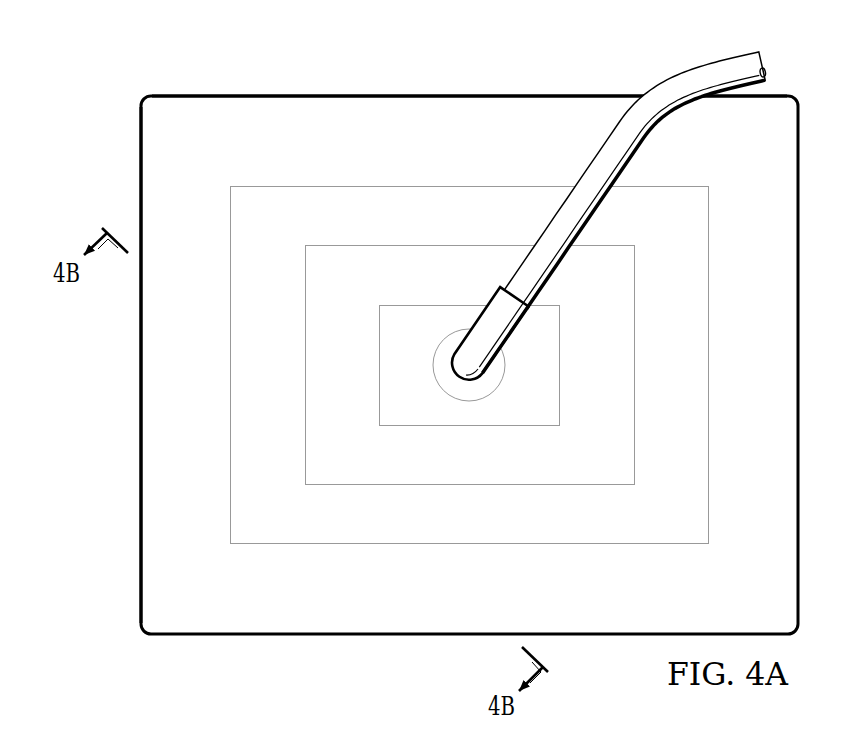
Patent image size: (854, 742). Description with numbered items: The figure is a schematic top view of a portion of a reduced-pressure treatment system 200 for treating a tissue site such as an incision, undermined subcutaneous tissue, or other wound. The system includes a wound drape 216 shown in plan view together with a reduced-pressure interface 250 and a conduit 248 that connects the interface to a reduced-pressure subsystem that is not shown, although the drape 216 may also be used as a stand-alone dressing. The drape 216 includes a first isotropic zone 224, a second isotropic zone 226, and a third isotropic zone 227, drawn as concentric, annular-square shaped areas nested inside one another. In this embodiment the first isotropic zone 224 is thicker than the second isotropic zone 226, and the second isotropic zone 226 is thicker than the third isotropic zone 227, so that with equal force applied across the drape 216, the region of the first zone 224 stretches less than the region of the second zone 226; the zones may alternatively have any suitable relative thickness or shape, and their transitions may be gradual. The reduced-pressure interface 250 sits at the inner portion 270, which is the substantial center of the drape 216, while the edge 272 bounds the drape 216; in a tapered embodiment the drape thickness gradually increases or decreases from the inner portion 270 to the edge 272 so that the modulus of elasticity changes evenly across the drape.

The reduced-pressure treatment system 200 is at (219, 77).
The wound drape 216 is at (530, 93).
The first isotropic zone 224 is at (347, 96).
The second isotropic zone 226 is at (418, 186).
The third isotropic zone 227 is at (498, 417).
The conduit 248 is at (671, 78).
The reduced-pressure interface 250 is at (479, 315).
The inner portion 270 is at (613, 365).
The edge 272 is at (140, 451).